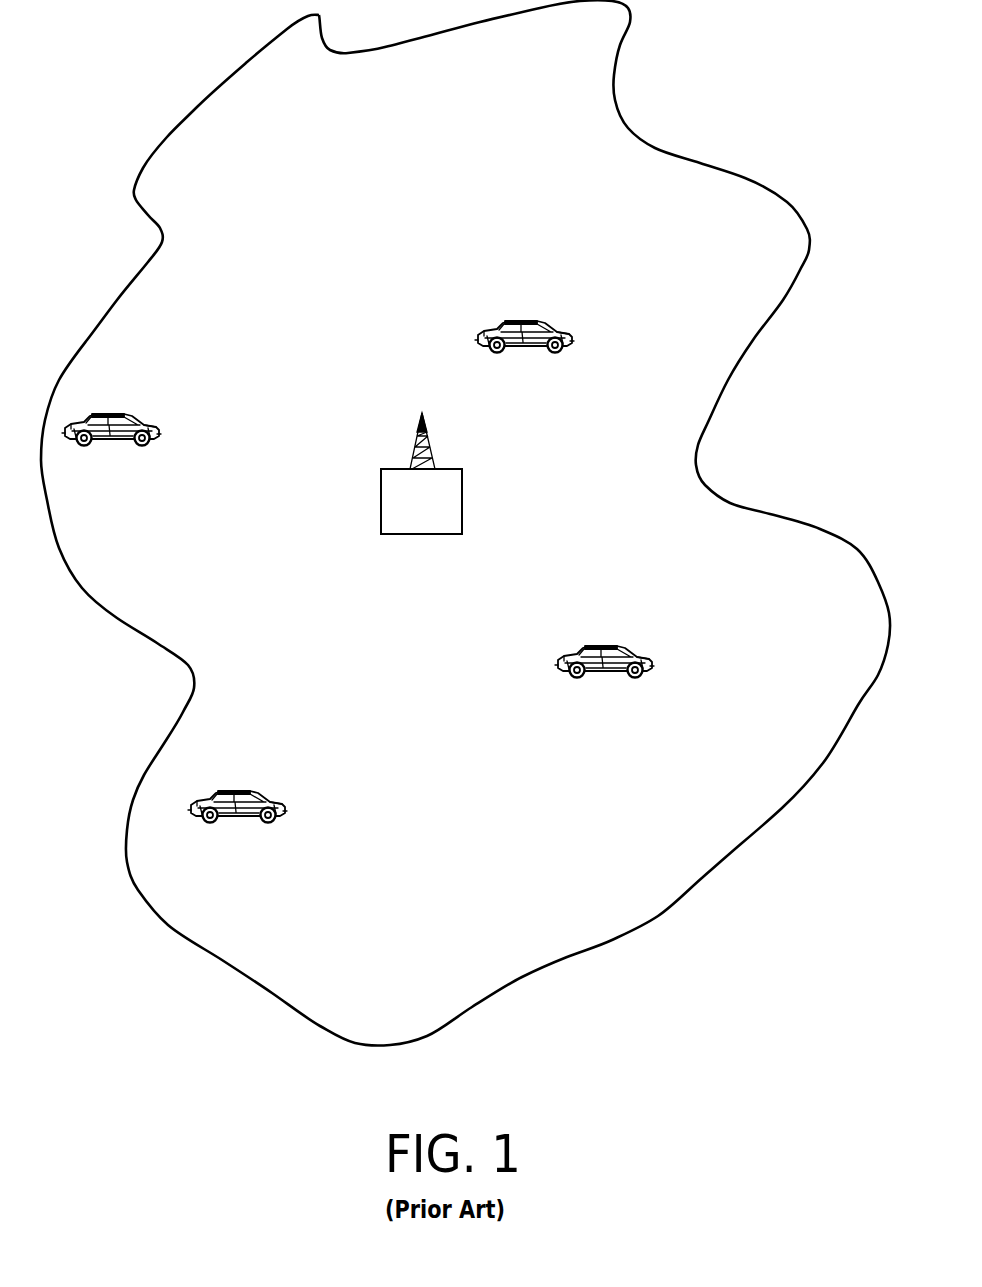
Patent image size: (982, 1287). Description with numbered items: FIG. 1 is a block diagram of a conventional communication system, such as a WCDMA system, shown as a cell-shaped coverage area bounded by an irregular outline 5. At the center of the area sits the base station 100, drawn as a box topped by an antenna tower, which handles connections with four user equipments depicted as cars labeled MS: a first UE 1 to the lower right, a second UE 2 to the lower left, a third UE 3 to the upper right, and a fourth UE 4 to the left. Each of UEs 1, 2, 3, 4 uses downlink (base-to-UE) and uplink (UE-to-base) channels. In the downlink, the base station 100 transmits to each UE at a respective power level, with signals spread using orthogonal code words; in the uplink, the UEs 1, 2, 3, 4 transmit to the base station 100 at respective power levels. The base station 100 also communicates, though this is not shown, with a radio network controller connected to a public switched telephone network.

The user equipment 1 is at (617, 647).
The user equipment 2 is at (249, 792).
The user equipment 3 is at (537, 322).
The user equipment 4 is at (124, 415).
The cell coverage area 5 is at (761, 827).
The base station 100 is at (462, 487).